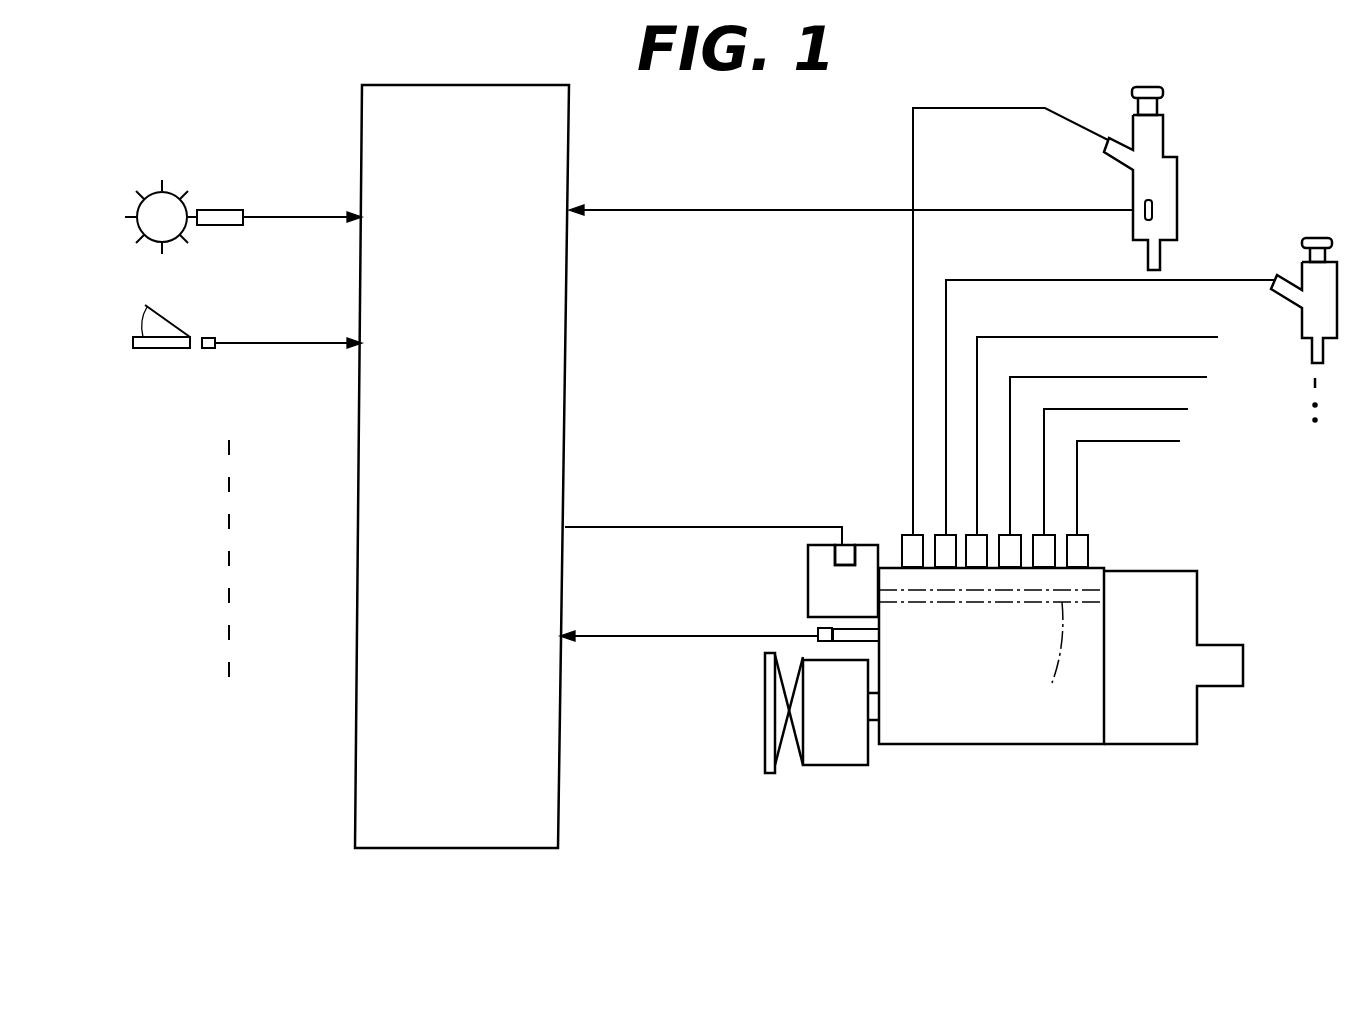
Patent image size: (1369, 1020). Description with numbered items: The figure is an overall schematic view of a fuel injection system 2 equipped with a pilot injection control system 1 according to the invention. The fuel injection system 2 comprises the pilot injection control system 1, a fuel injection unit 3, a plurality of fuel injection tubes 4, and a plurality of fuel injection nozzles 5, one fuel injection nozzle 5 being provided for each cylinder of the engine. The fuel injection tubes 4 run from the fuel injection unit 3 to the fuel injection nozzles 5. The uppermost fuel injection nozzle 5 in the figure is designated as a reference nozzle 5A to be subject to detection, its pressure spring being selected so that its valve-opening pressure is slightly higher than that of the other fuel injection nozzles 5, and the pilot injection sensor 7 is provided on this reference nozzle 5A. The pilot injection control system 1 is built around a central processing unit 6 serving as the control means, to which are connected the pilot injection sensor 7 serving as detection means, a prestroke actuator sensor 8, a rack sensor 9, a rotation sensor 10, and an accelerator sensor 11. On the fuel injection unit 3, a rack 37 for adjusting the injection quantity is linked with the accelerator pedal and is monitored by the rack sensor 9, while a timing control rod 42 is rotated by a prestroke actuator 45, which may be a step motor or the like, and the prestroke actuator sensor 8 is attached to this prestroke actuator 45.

The pilot injection control system 1 is at (965, 95).
The fuel injection system 2 is at (1032, 670).
The fuel injection unit 3 is at (980, 745).
The fuel injection tubes 4 is at (1077, 478).
The fuel injection nozzles 5 is at (1312, 320).
The reference nozzle 5A is at (1203, 178).
The central processing unit (CPU) 6 is at (471, 523).
The pilot injection sensor 7 is at (1152, 214).
The prestroke actuator sensor 8 is at (845, 557).
The rack sensor 9 is at (817, 640).
The rotation sensor 10 is at (222, 210).
The accelerator sensor 11 is at (210, 350).
The rack 37 is at (863, 637).
The timing control rod 42 is at (1053, 662).
The prestroke actuator 45 is at (723, 527).